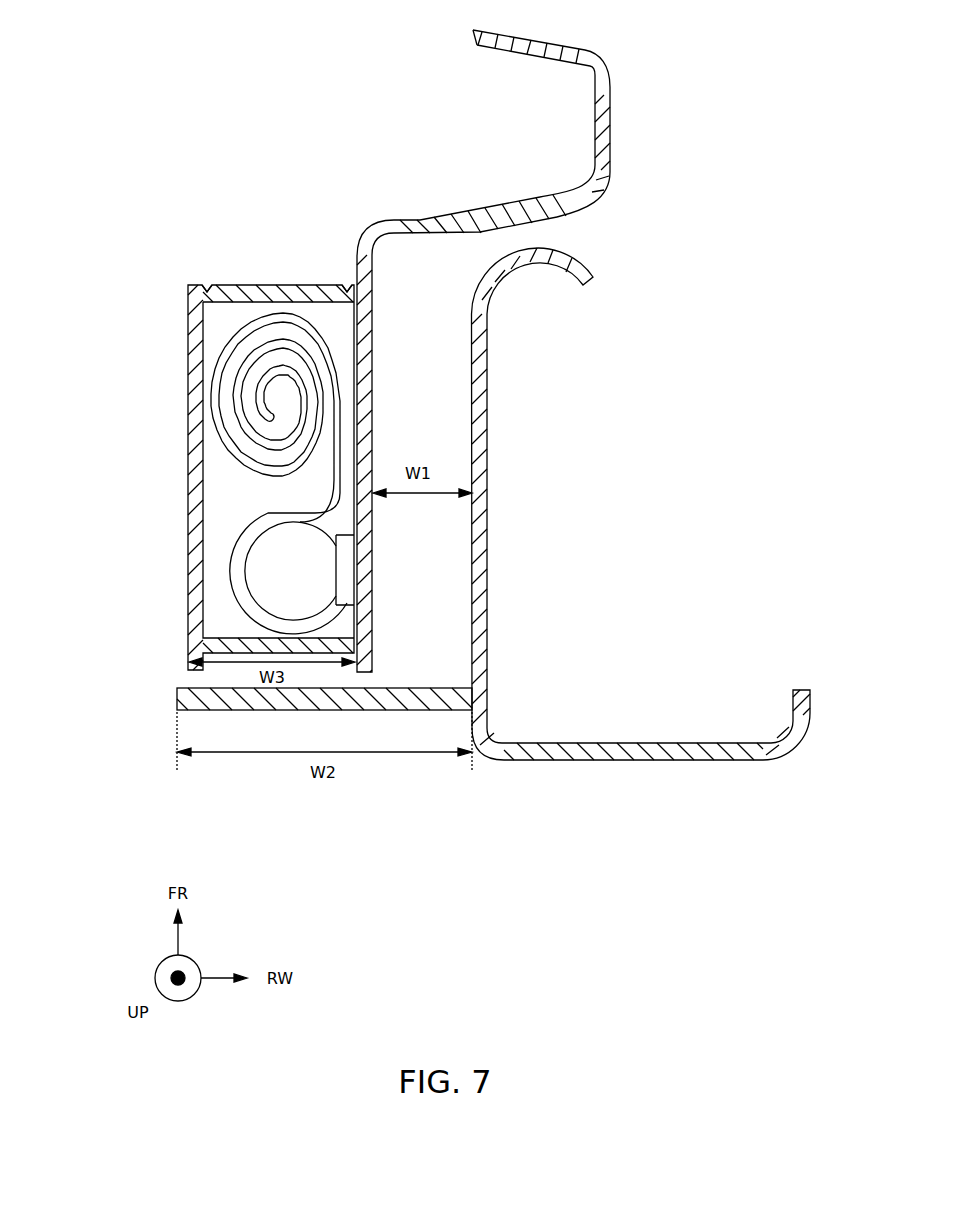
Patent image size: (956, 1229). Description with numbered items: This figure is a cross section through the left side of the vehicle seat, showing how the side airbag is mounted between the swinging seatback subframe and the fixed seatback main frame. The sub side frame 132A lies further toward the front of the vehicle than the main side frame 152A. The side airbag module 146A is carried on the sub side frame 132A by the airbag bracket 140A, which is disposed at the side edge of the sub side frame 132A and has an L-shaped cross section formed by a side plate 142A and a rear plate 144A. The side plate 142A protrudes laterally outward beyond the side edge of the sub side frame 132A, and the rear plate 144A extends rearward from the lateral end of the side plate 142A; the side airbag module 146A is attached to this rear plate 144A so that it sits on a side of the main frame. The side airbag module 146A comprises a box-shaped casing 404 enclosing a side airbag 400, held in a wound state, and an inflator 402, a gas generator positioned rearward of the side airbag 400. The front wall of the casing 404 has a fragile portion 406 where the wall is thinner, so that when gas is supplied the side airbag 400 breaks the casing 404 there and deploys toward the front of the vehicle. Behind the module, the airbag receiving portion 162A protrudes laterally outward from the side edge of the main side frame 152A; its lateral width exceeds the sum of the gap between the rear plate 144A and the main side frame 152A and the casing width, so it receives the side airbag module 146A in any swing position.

The airbag bracket 140A is at (393, 88).
The sub side frame 132A is at (603, 128).
The side plate 142A is at (445, 220).
The rear plate 144A is at (373, 300).
The side airbag module 146A is at (187, 372).
The fragile portion 406 is at (208, 287).
The side airbag 400 is at (242, 452).
The casing 404 is at (189, 537).
The inflator 402 is at (285, 588).
The main side frame 152A is at (478, 404).
The airbag receiving portion 162A is at (410, 698).